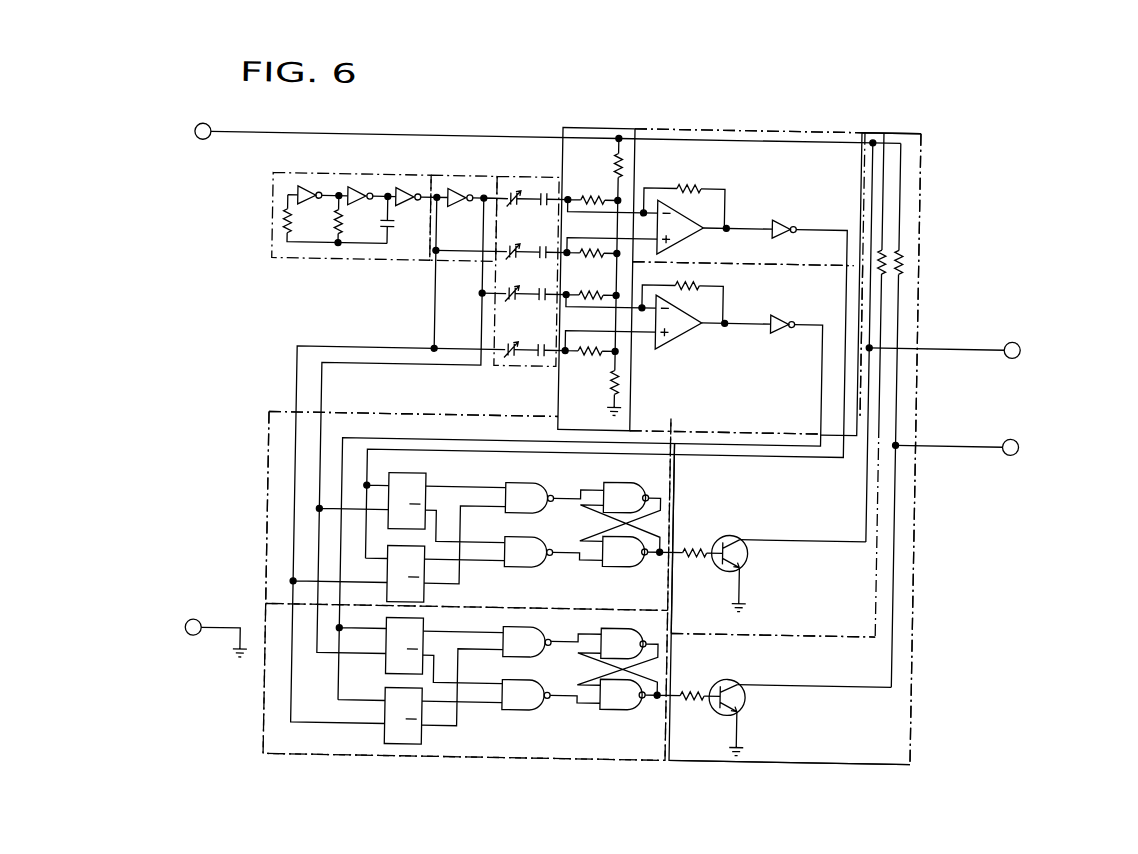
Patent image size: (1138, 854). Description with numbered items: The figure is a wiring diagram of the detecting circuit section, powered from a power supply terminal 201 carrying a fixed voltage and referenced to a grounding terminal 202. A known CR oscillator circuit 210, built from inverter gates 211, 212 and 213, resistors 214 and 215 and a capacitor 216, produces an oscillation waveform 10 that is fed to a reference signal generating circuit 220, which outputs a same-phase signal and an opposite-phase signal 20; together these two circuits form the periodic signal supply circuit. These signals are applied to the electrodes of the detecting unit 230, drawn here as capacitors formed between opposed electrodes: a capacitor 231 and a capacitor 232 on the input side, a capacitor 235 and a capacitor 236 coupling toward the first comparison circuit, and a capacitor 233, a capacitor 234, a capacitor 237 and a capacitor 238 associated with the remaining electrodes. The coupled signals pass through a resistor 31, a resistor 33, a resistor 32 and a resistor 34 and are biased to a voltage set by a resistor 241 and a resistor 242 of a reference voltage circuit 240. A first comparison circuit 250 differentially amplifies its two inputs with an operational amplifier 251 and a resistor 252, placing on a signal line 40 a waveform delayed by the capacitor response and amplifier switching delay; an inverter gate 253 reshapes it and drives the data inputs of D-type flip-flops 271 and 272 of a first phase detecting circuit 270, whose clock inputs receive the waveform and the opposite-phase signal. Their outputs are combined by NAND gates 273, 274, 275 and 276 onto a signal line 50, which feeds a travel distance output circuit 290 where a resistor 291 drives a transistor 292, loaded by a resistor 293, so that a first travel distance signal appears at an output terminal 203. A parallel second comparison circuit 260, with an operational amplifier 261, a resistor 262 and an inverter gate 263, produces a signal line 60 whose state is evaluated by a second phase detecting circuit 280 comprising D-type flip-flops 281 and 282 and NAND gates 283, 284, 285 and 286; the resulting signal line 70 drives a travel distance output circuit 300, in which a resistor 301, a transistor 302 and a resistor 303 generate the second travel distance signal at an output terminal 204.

The power supply terminal 201 is at (189, 139).
The grounding terminal 202 is at (188, 628).
The output terminal 203 is at (1018, 342).
The output terminal 204 is at (1018, 439).
The CR oscillator circuit 210 is at (268, 252).
The inverter gate 211 is at (300, 190).
The inverter gate 212 is at (352, 190).
The inverter gate 213 is at (400, 190).
The resistor 214 is at (283, 222).
The resistor 215 is at (334, 240).
The capacitor 216 is at (383, 240).
The reference signal generating circuit 220 is at (466, 177).
The oscillation waveform 10 is at (432, 192).
The opposite-phase signal 20 is at (479, 192).
The detecting unit 230 is at (500, 177).
The capacitor 231 is at (479, 231).
The capacitor 232 is at (503, 255).
The capacitor 233 is at (505, 298).
The capacitor 234 is at (505, 356).
The capacitor 235 is at (507, 210).
The capacitor 236 is at (512, 262).
The capacitor 237 is at (512, 304).
The capacitor 238 is at (540, 360).
The reference voltage circuit 240 is at (583, 127).
The resistor 241 is at (608, 160).
The resistor 242 is at (613, 383).
The resistor 31 is at (566, 248).
The resistor 32 is at (566, 292).
The resistor 33 is at (582, 185).
The resistor 34 is at (566, 340).
The first comparison circuit 250 is at (788, 127).
The operational amplifier 251 is at (700, 212).
The resistor 252 is at (683, 186).
The inverter gate 253 is at (783, 222).
The signal line 40 is at (722, 228).
The second comparison circuit 260 is at (856, 347).
The operational amplifier 261 is at (688, 333).
The resistor 262 is at (683, 283).
The inverter gate 263 is at (783, 316).
The signal line 60 is at (722, 319).
The first phase detecting circuit 270 is at (268, 467).
The D-type flip-flop 271 is at (426, 477).
The D-type flip-flop 272 is at (426, 598).
The NAND gate 273 is at (530, 474).
The NAND gate 274 is at (520, 567).
The NAND gate 275 is at (618, 481).
The NAND gate 276 is at (620, 565).
The signal line 50 is at (661, 555).
The second phase detecting circuit 280 is at (268, 700).
The D-type flip-flop 281 is at (389, 675).
The D-type flip-flop 282 is at (426, 738).
The NAND gate 283 is at (528, 628).
The NAND gate 284 is at (524, 681).
The NAND gate 285 is at (642, 632).
The NAND gate 286 is at (620, 708).
The signal line 70 is at (661, 700).
The travel distance output circuit 290 is at (878, 620).
The resistor 291 is at (696, 542).
The transistor 292 is at (741, 535).
The resistor 293 is at (878, 256).
The travel distance output circuit 300 is at (915, 708).
The resistor 301 is at (695, 692).
The transistor 302 is at (741, 680).
The resistor 303 is at (895, 256).